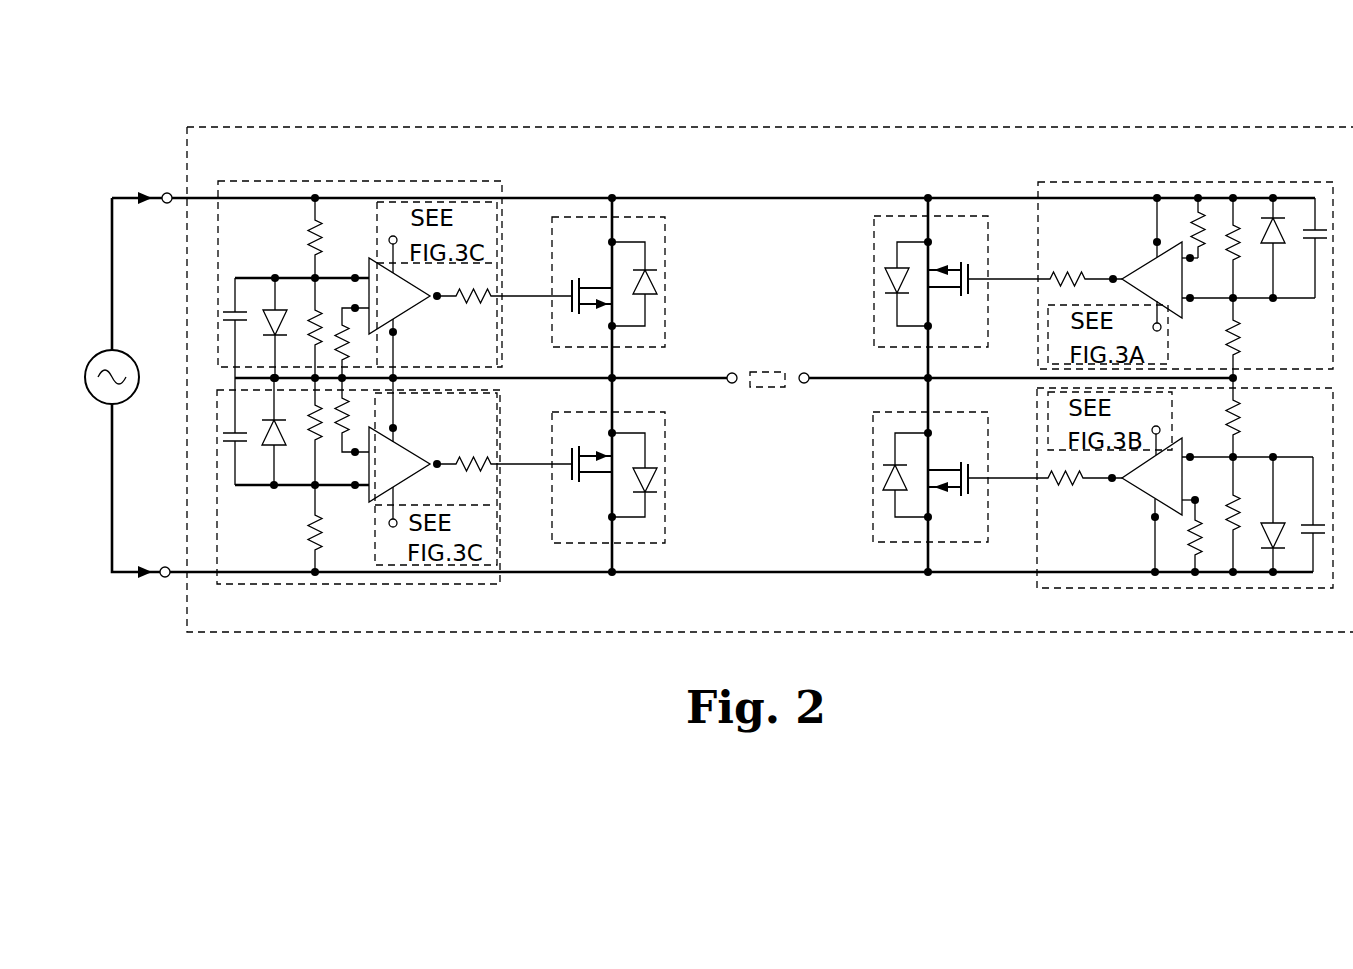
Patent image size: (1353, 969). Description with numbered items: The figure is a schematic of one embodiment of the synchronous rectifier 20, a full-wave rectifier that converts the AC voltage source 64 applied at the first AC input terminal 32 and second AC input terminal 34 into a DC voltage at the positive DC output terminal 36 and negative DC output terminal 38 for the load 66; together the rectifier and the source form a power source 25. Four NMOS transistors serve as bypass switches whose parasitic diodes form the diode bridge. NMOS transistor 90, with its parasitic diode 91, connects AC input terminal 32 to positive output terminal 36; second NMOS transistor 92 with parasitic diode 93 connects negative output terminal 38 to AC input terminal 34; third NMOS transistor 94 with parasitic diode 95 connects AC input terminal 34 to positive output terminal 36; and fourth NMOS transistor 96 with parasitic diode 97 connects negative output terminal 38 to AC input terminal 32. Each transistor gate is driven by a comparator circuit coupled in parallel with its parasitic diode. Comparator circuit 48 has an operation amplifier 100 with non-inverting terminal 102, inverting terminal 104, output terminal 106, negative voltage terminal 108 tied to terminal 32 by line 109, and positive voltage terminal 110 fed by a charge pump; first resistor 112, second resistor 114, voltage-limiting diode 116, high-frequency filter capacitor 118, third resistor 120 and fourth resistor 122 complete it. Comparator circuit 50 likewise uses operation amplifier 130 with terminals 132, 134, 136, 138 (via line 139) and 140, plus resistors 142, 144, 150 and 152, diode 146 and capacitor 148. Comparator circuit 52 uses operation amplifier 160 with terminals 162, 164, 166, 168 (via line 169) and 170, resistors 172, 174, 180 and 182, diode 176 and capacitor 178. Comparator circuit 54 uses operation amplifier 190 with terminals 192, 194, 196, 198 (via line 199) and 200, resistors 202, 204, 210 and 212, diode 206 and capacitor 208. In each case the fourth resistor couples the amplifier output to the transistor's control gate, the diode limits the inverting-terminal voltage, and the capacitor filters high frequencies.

The synchronous rectifier 20 is at (612, 127).
The power source 25 is at (203, 76).
The first AC input terminal 32 is at (167, 192).
The second AC input terminal 34 is at (165, 578).
The positive DC output terminal 36 is at (806, 384).
The negative DC output terminal 38 is at (733, 384).
The comparator circuit 48 is at (1197, 182).
The comparator circuit 50 is at (358, 585).
The comparator circuit 52 is at (1140, 588).
The comparator circuit 54 is at (343, 181).
The AC voltage source 64 is at (137, 378).
The load 66 is at (768, 372).
The NMOS transistor 90 is at (874, 238).
The parasitic diode 91 is at (887, 276).
The second NMOS transistor 92 is at (666, 517).
The parasitic diode 93 is at (653, 480).
The third NMOS transistor 94 is at (873, 517).
The parasitic diode 95 is at (880, 472).
The fourth NMOS transistor 96 is at (666, 233).
The parasitic diode 97 is at (652, 282).
The operation amplifier 100 is at (1152, 280).
The non-inverting terminal 102 is at (1190, 263).
The inverting terminal 104 is at (1190, 302).
The output terminal 106 is at (1112, 278).
The negative voltage terminal 108 is at (1155, 242).
The line 109 is at (1157, 224).
The positive voltage terminal 110 is at (1162, 331).
The first resistor 112 is at (1240, 340).
The second resistor 114 is at (1237, 247).
The diode 116 is at (1276, 250).
The capacitor 118 is at (1313, 233).
The third resistor 120 is at (1182, 228).
The fourth resistor 122 is at (1065, 276).
The operation amplifier 130 is at (399, 464).
The non-inverting terminal 132 is at (355, 456).
The inverting terminal 134 is at (355, 489).
The output terminal 136 is at (493, 481).
The negative voltage terminal 138 is at (397, 430).
The line 139 is at (396, 406).
The positive voltage terminal 140 is at (389, 525).
The first resistor 142 is at (314, 420).
The second resistor 144 is at (312, 532).
The diode 146 is at (278, 442).
The capacitor 148 is at (222, 436).
The third resistor 150 is at (347, 407).
The fourth resistor 152 is at (490, 470).
The operation amplifier 160 is at (1152, 476).
The non-inverting terminal 162 is at (1195, 500).
The inverting terminal 164 is at (1190, 456).
The output terminal 166 is at (1110, 481).
The negative voltage terminal 168 is at (1153, 517).
The line 169 is at (1155, 546).
The positive voltage terminal 170 is at (1159, 427).
The first resistor 172 is at (1238, 422).
The second resistor 174 is at (1236, 522).
The diode 176 is at (1276, 527).
The capacitor 178 is at (1314, 520).
The third resistor 180 is at (1192, 537).
The fourth resistor 182 is at (1050, 480).
The operation amplifier 190 is at (399, 296).
The non-inverting terminal 192 is at (354, 307).
The inverting terminal 194 is at (355, 274).
The output terminal 196 is at (470, 290).
The negative voltage terminal 198 is at (397, 332).
The line 199 is at (396, 349).
The positive voltage terminal 200 is at (391, 236).
The first resistor 202 is at (312, 232).
The second resistor 204 is at (312, 345).
The diode 206 is at (277, 318).
The capacitor 208 is at (222, 311).
The third resistor 210 is at (343, 343).
The fourth resistor 212 is at (490, 300).